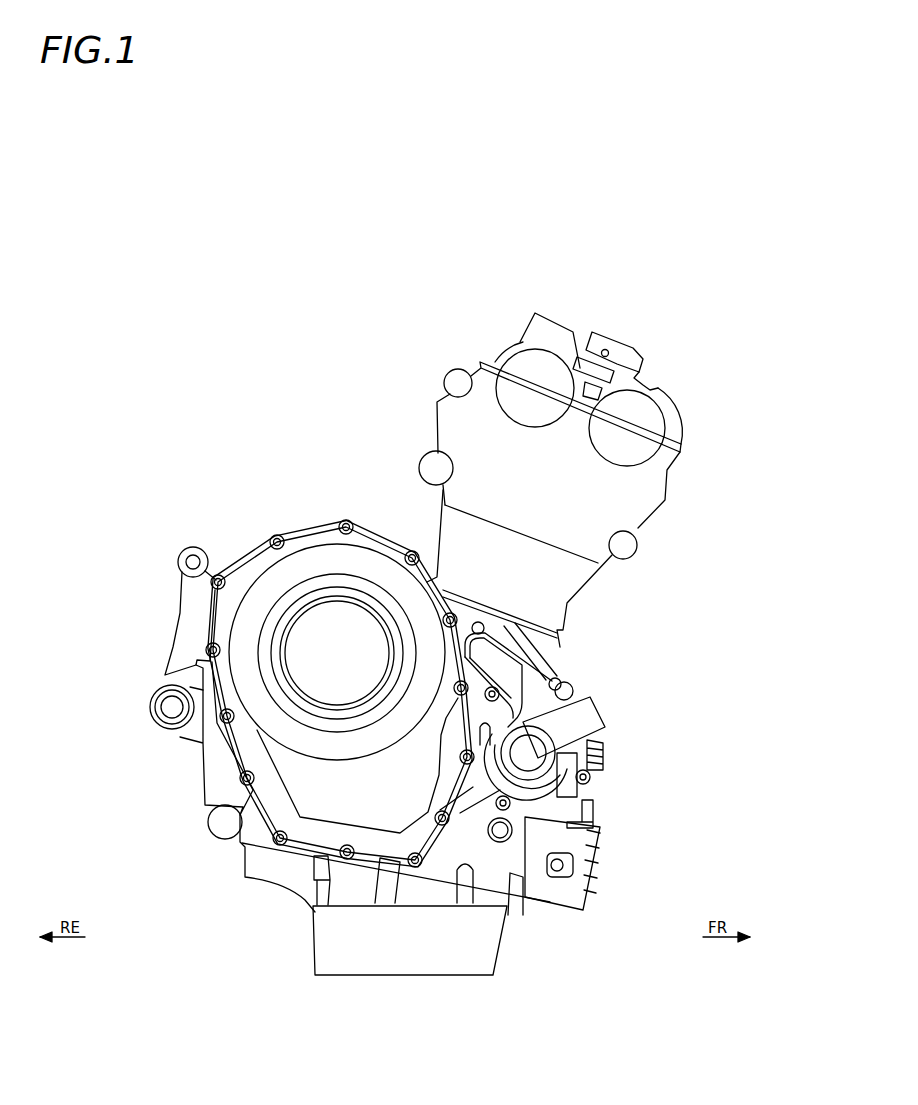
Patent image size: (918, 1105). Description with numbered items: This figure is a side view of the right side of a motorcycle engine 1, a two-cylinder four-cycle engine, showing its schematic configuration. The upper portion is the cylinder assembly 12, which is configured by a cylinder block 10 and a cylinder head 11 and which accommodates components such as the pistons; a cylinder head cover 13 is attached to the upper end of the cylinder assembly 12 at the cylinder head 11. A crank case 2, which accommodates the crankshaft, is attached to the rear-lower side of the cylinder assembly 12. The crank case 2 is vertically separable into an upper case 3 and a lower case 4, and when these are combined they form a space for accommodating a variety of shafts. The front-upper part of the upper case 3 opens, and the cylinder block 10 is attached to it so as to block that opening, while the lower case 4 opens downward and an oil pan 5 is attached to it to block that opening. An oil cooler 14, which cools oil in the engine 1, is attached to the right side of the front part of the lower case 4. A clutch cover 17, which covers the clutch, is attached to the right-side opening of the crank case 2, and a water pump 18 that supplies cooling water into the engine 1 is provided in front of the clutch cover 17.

The engine 1 is at (140, 218).
The crank case 2 is at (120, 638).
The upper case 3 is at (200, 622).
The lower case 4 is at (215, 757).
The oil pan 5 is at (332, 940).
The cylinder block 10 is at (455, 537).
The cylinder head 11 is at (478, 438).
The cylinder assembly 12 is at (345, 395).
The cylinder head cover 13 is at (498, 357).
The oil cooler 14 is at (580, 843).
The clutch cover 17 is at (267, 590).
The water pump 18 is at (537, 713).